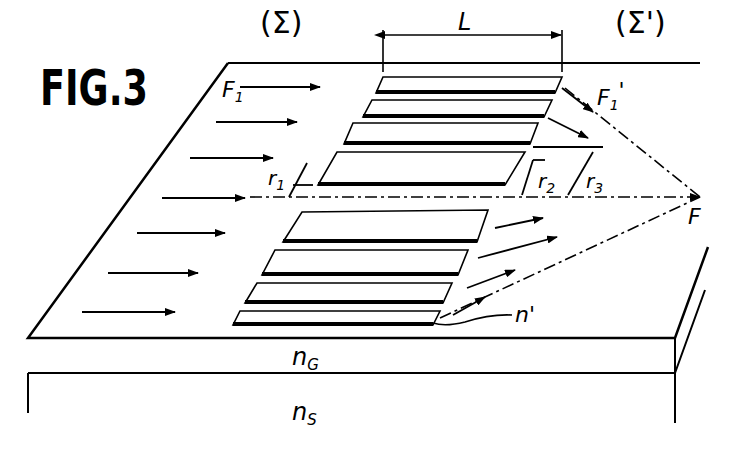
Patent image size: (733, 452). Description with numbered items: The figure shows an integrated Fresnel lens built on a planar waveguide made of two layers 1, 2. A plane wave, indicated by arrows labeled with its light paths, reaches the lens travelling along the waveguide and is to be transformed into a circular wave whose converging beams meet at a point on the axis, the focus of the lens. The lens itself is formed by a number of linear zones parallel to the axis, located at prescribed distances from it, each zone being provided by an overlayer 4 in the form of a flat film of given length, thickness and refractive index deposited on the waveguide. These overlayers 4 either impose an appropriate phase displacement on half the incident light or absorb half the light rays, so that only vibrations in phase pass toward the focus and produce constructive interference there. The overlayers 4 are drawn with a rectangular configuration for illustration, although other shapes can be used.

The layer 1 is at (483, 424).
The layer 2 is at (168, 360).
The overlayer 4 is at (237, 314).